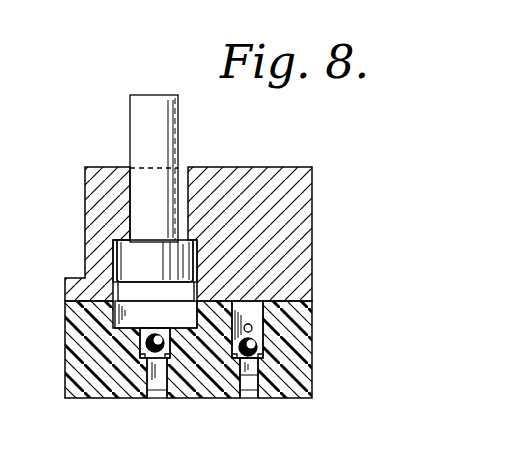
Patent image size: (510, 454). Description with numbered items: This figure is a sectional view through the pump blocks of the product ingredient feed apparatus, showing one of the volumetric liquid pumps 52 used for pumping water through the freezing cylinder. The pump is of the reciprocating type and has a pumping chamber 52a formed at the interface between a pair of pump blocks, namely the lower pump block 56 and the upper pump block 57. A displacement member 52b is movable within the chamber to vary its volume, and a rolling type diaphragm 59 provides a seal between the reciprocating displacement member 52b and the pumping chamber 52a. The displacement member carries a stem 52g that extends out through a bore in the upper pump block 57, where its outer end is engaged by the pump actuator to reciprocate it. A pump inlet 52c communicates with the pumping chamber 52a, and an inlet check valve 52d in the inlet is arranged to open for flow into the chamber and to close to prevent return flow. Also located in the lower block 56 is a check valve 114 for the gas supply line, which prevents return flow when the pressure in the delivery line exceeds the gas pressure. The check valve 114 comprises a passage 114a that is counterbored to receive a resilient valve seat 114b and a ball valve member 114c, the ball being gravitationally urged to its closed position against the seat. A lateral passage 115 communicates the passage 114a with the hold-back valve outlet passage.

The volumetric liquid pump 52 is at (131, 265).
The pumping chamber 52a is at (113, 317).
The displacement member 52b is at (193, 248).
The pump inlet 52c is at (163, 378).
The inlet check valve 52d is at (139, 330).
The stem 52g is at (173, 134).
The pump block 56 is at (317, 360).
The upper pump block 57 is at (313, 222).
The rolling type diaphragm 59 is at (116, 240).
The check valve 114 is at (265, 348).
The passage 114a is at (252, 372).
The resilient valve seat 114b is at (239, 346).
The ball valve member 114c is at (263, 337).
The lateral passage 115 is at (248, 324).